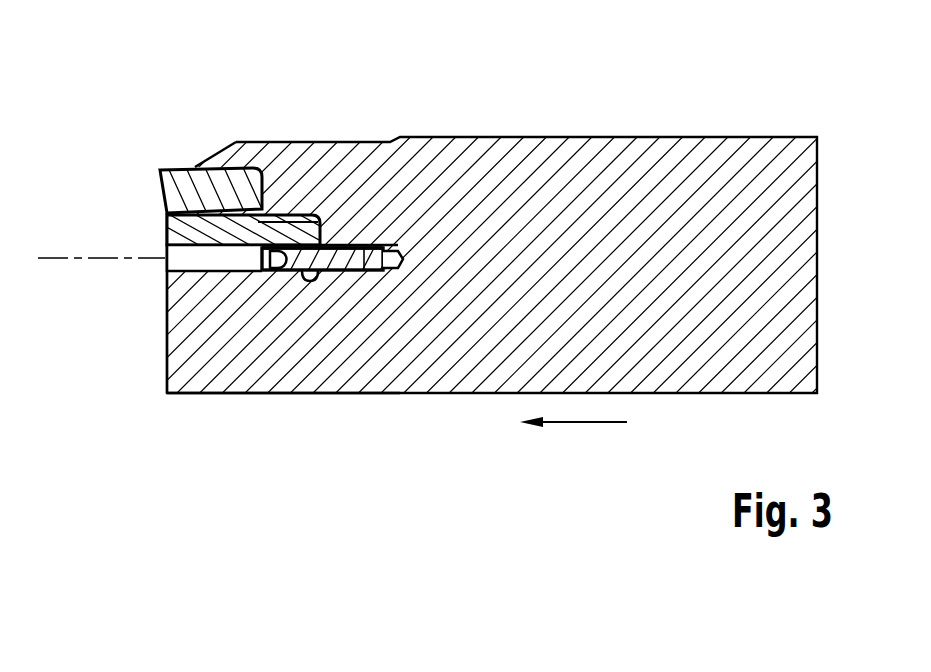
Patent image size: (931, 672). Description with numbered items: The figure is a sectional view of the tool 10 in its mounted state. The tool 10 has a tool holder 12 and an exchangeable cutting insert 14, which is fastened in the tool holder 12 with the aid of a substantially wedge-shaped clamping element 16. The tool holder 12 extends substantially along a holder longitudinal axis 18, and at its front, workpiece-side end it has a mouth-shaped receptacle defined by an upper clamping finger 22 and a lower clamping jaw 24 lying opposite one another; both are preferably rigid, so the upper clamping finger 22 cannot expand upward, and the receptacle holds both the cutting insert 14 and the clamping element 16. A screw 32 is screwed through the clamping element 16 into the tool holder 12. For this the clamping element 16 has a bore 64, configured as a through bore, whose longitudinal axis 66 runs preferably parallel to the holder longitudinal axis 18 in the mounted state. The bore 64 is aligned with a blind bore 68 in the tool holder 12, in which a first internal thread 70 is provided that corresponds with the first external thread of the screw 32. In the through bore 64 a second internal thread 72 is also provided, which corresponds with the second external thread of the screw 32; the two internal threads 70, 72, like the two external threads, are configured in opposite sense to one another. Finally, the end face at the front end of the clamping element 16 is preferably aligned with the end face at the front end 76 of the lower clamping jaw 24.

The tool 10 is at (139, 95).
The tool holder 12 is at (548, 170).
The cutting insert 14 is at (175, 182).
The clamping element 16 is at (180, 220).
The holder longitudinal axis 18 is at (585, 423).
The upper clamping finger 22 is at (213, 156).
The lower clamping jaw 24 is at (240, 362).
The screw 32 is at (348, 254).
The bore 64 is at (185, 262).
The longitudinal axis 66 is at (47, 260).
The blind bore 68 is at (393, 250).
The first internal thread 70 is at (355, 247).
The second internal thread 72 is at (308, 284).
The front end 76 is at (152, 371).